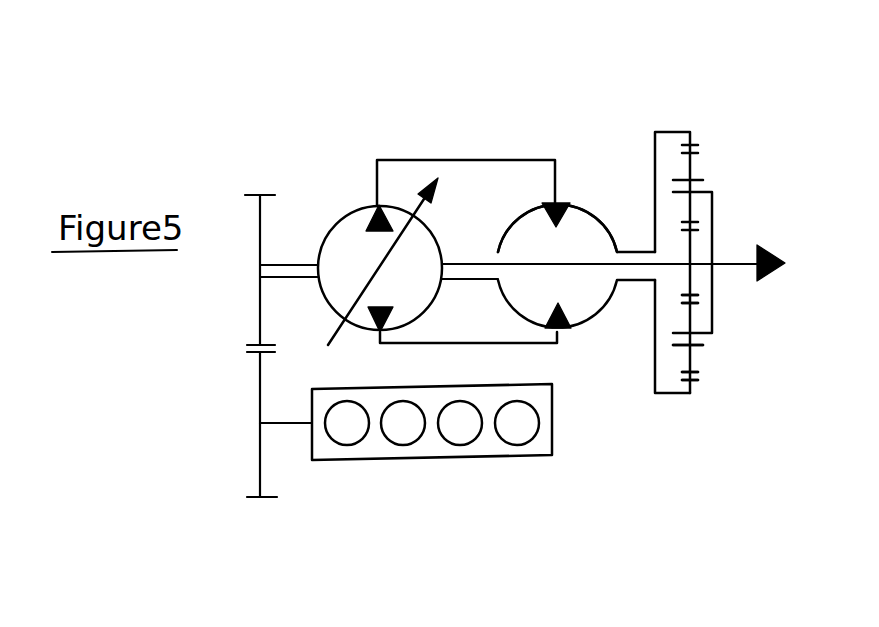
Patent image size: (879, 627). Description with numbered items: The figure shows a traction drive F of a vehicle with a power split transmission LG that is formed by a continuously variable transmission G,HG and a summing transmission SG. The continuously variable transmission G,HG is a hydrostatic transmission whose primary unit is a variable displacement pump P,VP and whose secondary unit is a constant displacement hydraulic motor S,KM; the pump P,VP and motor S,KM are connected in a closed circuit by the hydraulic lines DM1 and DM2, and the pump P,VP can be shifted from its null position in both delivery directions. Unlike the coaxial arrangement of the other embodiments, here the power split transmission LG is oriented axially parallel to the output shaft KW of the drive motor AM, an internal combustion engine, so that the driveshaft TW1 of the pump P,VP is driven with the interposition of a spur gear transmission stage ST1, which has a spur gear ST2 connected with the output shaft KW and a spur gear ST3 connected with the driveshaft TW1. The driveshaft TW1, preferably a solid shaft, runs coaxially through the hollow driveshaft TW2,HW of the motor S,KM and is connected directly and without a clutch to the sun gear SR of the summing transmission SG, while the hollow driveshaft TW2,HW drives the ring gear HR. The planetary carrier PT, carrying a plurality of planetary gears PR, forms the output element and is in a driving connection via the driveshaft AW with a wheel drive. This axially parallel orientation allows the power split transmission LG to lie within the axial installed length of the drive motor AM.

The power split transmission LG is at (707, 95).
The spur gear transmission stage ST1 is at (255, 507).
The spur gear ST2 is at (238, 423).
The spur gear ST3 is at (232, 383).
The output shaft KW is at (288, 425).
The drive motor AM is at (543, 447).
The primary unit / variable displacement pump P,VP is at (347, 240).
The hydraulic line DM1 is at (387, 157).
The hydraulic line DM2 is at (410, 347).
The driveshaft TW1 is at (458, 281).
The continuously variable transmission / hydrostatic transmission G,HG is at (507, 137).
The secondary unit / constant displacement motor S,KM is at (578, 228).
The driveshaft / hollow shaft TW2,HW is at (628, 282).
The summing transmission SG is at (712, 138).
The sun gear SR is at (693, 245).
The planetary carrier PT is at (713, 320).
The planetary gears PR is at (695, 358).
The ring gear HR is at (690, 393).
The driveshaft AW is at (733, 267).
The traction drive F is at (653, 440).